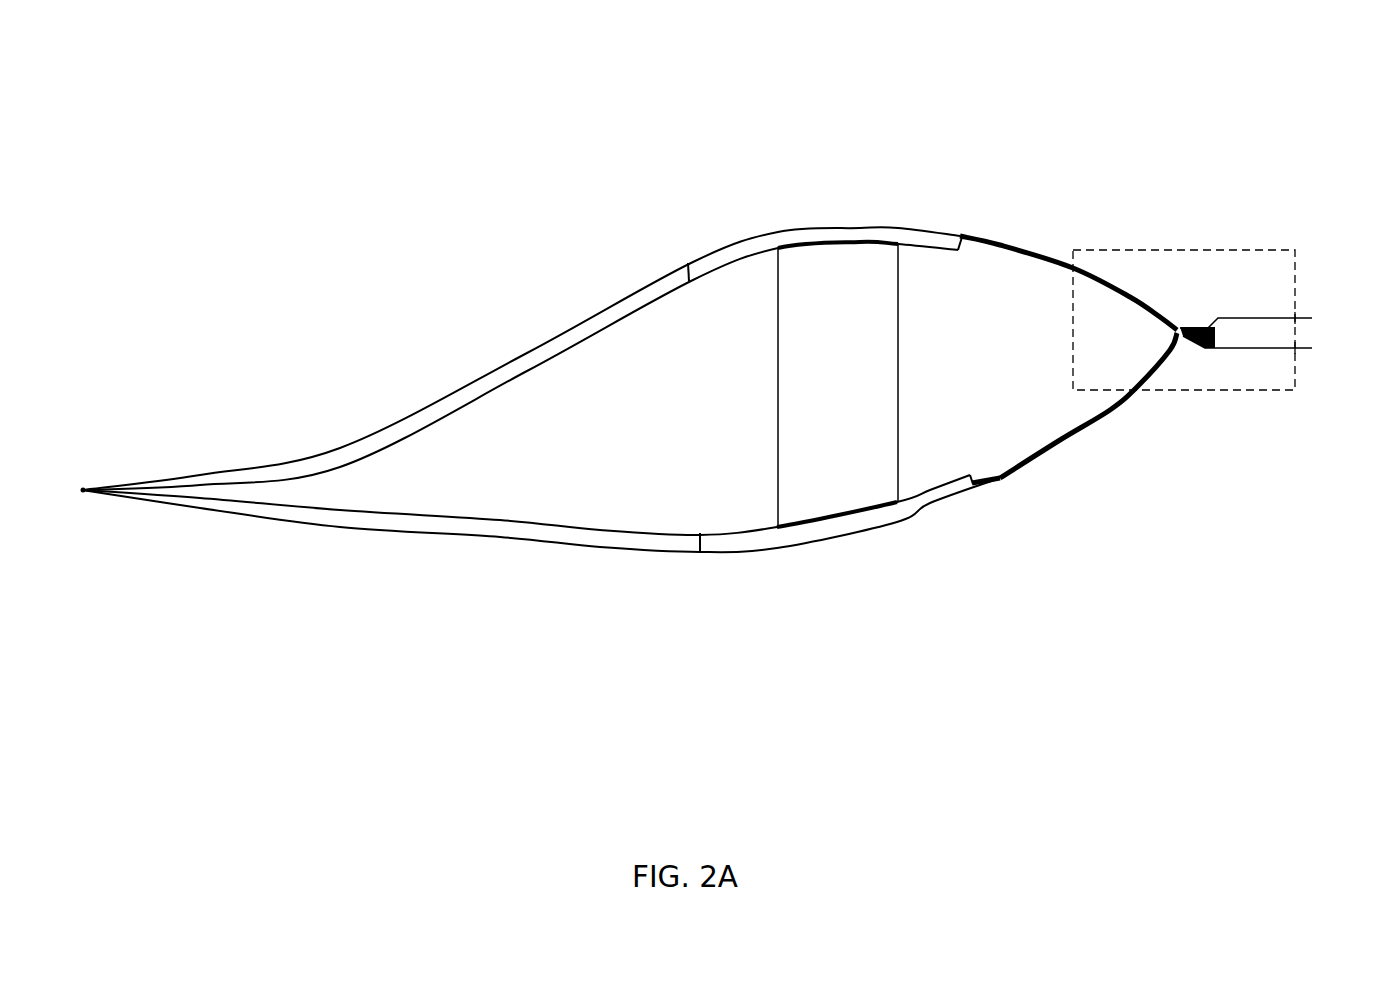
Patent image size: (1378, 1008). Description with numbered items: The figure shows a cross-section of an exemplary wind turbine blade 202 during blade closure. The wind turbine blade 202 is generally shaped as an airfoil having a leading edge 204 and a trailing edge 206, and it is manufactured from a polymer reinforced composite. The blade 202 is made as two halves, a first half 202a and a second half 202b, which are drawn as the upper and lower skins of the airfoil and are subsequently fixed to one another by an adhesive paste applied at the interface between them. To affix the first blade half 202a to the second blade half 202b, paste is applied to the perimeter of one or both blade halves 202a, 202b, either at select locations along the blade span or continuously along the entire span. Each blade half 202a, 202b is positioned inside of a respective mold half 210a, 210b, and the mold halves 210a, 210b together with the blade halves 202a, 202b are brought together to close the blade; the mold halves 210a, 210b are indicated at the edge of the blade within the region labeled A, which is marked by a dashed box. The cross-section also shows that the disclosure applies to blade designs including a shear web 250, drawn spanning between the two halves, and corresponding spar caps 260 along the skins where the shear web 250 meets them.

The wind turbine blade 202 is at (300, 109).
The first half 202a is at (688, 270).
The second half 202b is at (653, 538).
The leading edge 204 is at (1167, 358).
The trailing edge 206 is at (87, 486).
The shear web 250 is at (893, 293).
The spar cap 260 is at (855, 527).
The trailing edge detail region A is at (1148, 237).
The mold half 210a is at (1267, 315).
The mold half 210b is at (1270, 362).